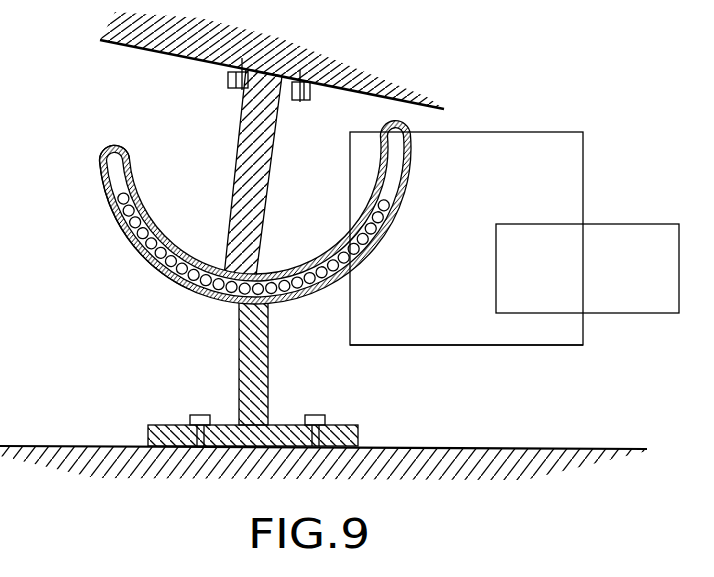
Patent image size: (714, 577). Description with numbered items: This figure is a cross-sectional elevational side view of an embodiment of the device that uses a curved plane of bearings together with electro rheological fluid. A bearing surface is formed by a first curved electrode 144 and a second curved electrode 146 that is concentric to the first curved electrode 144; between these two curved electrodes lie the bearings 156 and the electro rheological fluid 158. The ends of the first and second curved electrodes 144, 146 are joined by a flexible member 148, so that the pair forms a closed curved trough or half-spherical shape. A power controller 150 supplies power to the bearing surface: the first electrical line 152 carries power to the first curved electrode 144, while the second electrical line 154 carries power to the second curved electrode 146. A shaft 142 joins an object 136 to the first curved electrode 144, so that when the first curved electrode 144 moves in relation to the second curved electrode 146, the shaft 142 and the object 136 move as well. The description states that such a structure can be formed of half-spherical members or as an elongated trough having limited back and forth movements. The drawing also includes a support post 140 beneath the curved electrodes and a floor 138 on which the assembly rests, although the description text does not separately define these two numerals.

The object 136 is at (300, 56).
The floor 138 is at (127, 457).
The vertical post 140 is at (262, 345).
The shaft 142 is at (245, 183).
The first curved electrode 144 is at (132, 160).
The second curved electrode 146 is at (102, 186).
The flexible member 148 is at (112, 123).
The power controller 150 is at (633, 228).
The first electrical line 152 is at (528, 132).
The second electrical line 154 is at (452, 345).
The bearings 156 is at (125, 234).
The electro rheological fluid 158 is at (178, 278).